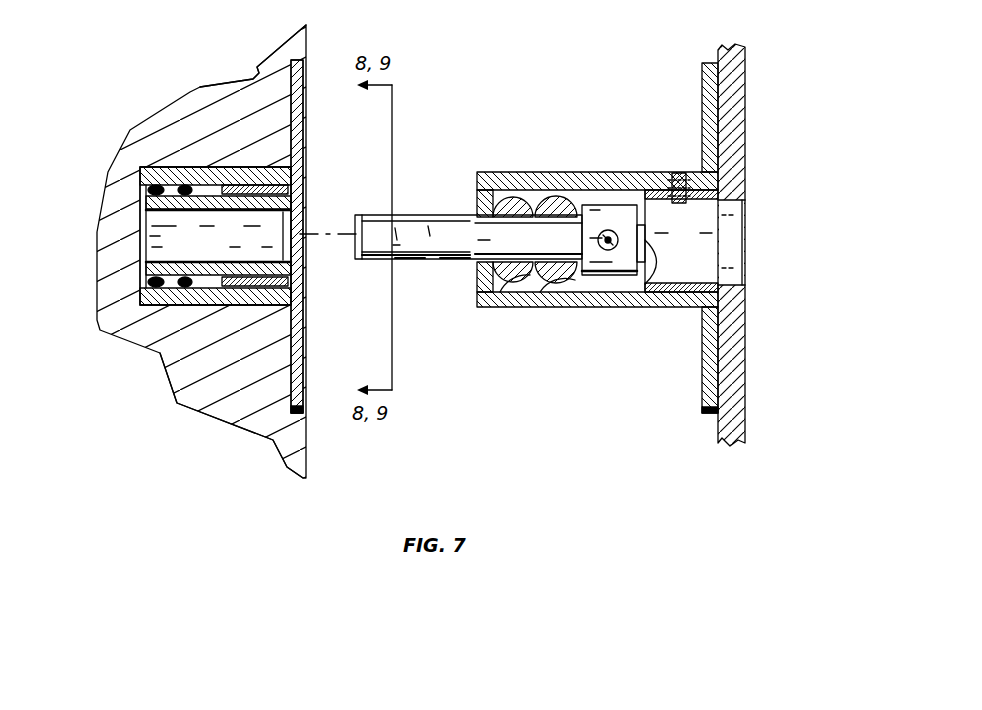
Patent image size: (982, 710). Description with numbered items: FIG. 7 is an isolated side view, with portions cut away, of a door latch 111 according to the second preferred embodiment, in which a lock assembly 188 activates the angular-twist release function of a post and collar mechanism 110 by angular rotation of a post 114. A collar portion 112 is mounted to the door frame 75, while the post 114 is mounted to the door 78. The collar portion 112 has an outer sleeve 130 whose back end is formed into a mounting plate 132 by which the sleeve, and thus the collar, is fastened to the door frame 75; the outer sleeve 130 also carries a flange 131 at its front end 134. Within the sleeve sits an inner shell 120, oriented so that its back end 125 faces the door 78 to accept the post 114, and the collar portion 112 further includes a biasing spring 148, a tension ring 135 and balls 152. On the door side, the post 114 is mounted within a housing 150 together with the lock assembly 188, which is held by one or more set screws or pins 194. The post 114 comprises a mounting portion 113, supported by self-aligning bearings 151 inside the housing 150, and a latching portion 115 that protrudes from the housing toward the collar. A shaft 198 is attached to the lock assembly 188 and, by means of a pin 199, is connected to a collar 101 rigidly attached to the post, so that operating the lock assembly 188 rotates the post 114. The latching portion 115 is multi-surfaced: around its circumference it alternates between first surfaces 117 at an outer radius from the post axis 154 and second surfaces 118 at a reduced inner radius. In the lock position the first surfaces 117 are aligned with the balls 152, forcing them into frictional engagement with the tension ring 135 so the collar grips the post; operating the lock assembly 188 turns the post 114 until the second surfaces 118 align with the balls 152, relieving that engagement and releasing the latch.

The door frame 75 is at (257, 73).
The collar portion 112 is at (205, 162).
The biasing spring 148 is at (162, 175).
The front end 134 is at (145, 228).
The inner shell 120 is at (143, 266).
The flange 131 is at (145, 295).
The outer sleeve 130 is at (190, 312).
The tension ring 135 is at (280, 312).
The balls 152 is at (268, 215).
The back end 125 is at (310, 196).
The post axis 154 is at (341, 234).
The first surfaces 117 is at (419, 214).
The second surfaces 118 is at (377, 237).
The post 114 is at (449, 264).
The latching portion 115 is at (405, 265).
The mounting plate 132 is at (305, 326).
The post and collar mechanism 110 is at (453, 68).
The housing 150 is at (581, 168).
The set screws or pins 194 is at (688, 145).
The door 78 is at (739, 99).
The door latch 111 is at (818, 90).
The lock assembly 188 is at (727, 233).
The mounting portion 113 is at (528, 238).
The pin 199 is at (604, 250).
The collar 101 is at (617, 276).
The self-aligning bearings 151 is at (527, 308).
The shaft 198 is at (647, 310).